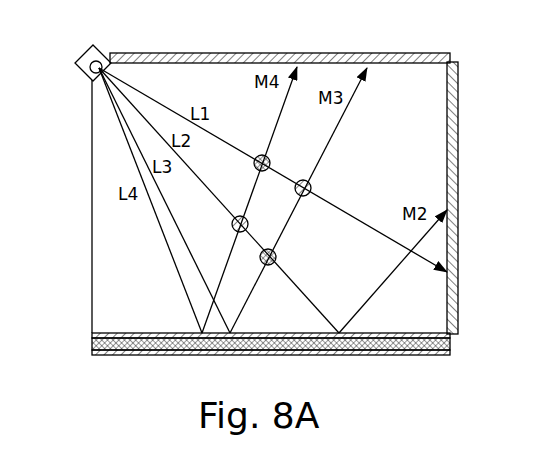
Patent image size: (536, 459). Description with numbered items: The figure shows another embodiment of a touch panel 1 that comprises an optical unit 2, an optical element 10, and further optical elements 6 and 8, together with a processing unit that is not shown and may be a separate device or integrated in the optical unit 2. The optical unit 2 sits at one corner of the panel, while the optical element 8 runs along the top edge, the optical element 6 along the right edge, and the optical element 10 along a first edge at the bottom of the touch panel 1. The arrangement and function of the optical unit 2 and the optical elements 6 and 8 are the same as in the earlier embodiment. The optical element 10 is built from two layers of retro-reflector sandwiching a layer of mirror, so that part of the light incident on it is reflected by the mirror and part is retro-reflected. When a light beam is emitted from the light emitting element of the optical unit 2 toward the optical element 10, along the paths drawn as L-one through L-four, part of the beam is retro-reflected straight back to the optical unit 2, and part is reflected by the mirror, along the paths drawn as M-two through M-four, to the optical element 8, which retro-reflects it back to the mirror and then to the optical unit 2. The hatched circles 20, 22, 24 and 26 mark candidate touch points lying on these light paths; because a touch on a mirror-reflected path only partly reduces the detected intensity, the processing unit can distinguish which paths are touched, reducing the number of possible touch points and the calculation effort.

The touch panel 1 is at (100, 203).
The optical unit 2 is at (76, 67).
The optical element 6 is at (459, 205).
The optical element 8 is at (265, 53).
The optical element 10 is at (260, 355).
The first scattering point 20 is at (260, 156).
The second scattering point 22 is at (276, 257).
The third scattering point 24 is at (311, 188).
The fourth scattering point 26 is at (232, 224).